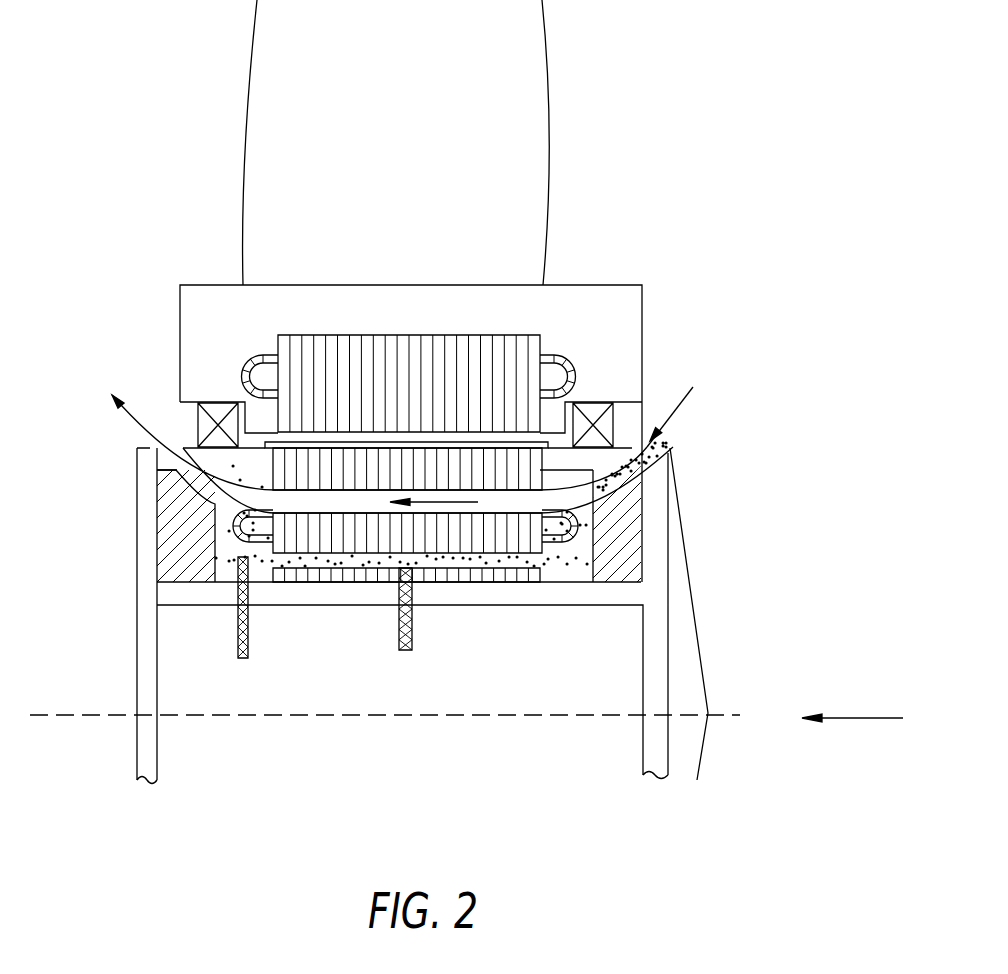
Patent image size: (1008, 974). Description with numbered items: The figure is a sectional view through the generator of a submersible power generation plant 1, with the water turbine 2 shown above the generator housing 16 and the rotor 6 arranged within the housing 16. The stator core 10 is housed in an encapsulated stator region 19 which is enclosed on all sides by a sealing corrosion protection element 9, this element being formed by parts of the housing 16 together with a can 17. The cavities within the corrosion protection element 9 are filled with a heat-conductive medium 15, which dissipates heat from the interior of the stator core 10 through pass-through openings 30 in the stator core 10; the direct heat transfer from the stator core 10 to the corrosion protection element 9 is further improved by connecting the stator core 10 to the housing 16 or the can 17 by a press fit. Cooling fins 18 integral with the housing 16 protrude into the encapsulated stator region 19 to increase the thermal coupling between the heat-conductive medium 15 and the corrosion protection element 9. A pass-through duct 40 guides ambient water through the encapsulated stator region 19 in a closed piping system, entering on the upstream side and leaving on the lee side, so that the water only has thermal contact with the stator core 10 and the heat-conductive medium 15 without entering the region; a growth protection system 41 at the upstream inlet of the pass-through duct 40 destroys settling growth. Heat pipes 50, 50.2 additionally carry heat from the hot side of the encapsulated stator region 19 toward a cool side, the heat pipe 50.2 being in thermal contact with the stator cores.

The submersible power generation plant 1 is at (689, 643).
The water turbine 2 is at (517, 153).
The rotor 6 is at (538, 337).
The corrosion protection element 9 is at (148, 480).
The stator core 10 is at (338, 533).
The heat-conductive medium 15 is at (225, 567).
The housing 16 is at (145, 528).
The can 17 is at (540, 437).
The cooling fin 18 is at (618, 560).
The encapsulated stator region 19 is at (573, 566).
The pass-through opening in stator core 30 is at (487, 575).
The pass-through duct 40 is at (608, 483).
The growth protection system 41 is at (650, 452).
The heat pipe 50 is at (238, 637).
The heat pipe 50.2 is at (412, 632).